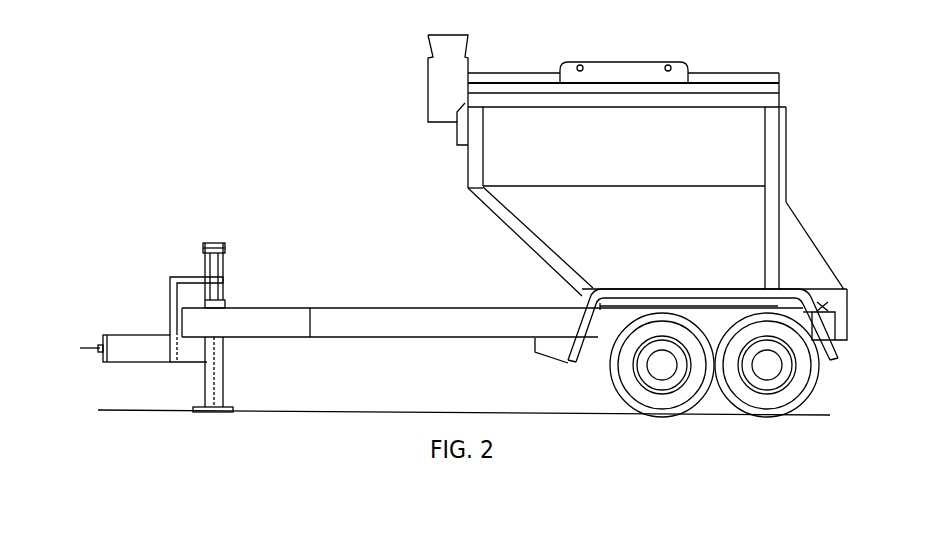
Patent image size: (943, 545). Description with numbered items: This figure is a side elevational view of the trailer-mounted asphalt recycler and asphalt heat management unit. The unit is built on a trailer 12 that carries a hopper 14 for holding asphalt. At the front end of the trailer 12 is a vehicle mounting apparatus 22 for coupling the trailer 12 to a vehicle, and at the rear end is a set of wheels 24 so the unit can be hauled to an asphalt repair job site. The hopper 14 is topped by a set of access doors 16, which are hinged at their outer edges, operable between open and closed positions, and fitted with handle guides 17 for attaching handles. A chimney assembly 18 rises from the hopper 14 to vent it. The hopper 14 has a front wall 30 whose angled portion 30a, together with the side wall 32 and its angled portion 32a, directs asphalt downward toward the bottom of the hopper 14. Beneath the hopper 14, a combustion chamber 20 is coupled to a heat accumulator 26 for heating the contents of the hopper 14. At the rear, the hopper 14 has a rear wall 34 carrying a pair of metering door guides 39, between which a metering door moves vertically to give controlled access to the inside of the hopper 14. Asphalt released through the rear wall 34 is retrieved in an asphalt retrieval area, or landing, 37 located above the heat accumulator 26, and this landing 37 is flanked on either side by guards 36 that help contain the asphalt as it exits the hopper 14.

The trailer 12 is at (339, 306).
The hopper 14 is at (750, 142).
The set of access doors 16 is at (728, 73).
The handle guides 17 is at (580, 63).
The chimney assembly 18 is at (438, 91).
The combustion chamber 20 is at (552, 350).
The vehicle mounting apparatus 22 is at (140, 332).
The set of wheels 24 is at (713, 412).
The heat accumulator 26 is at (824, 360).
The front wall 30 is at (465, 165).
The angled portion of front wall 30a is at (527, 245).
The side wall 32 is at (621, 159).
The angled portion of side wall 32a is at (630, 234).
The rear wall 34 is at (780, 246).
The guards 36 is at (810, 262).
The asphalt retrieval area 37 is at (815, 288).
The metering door guides 39 is at (790, 137).